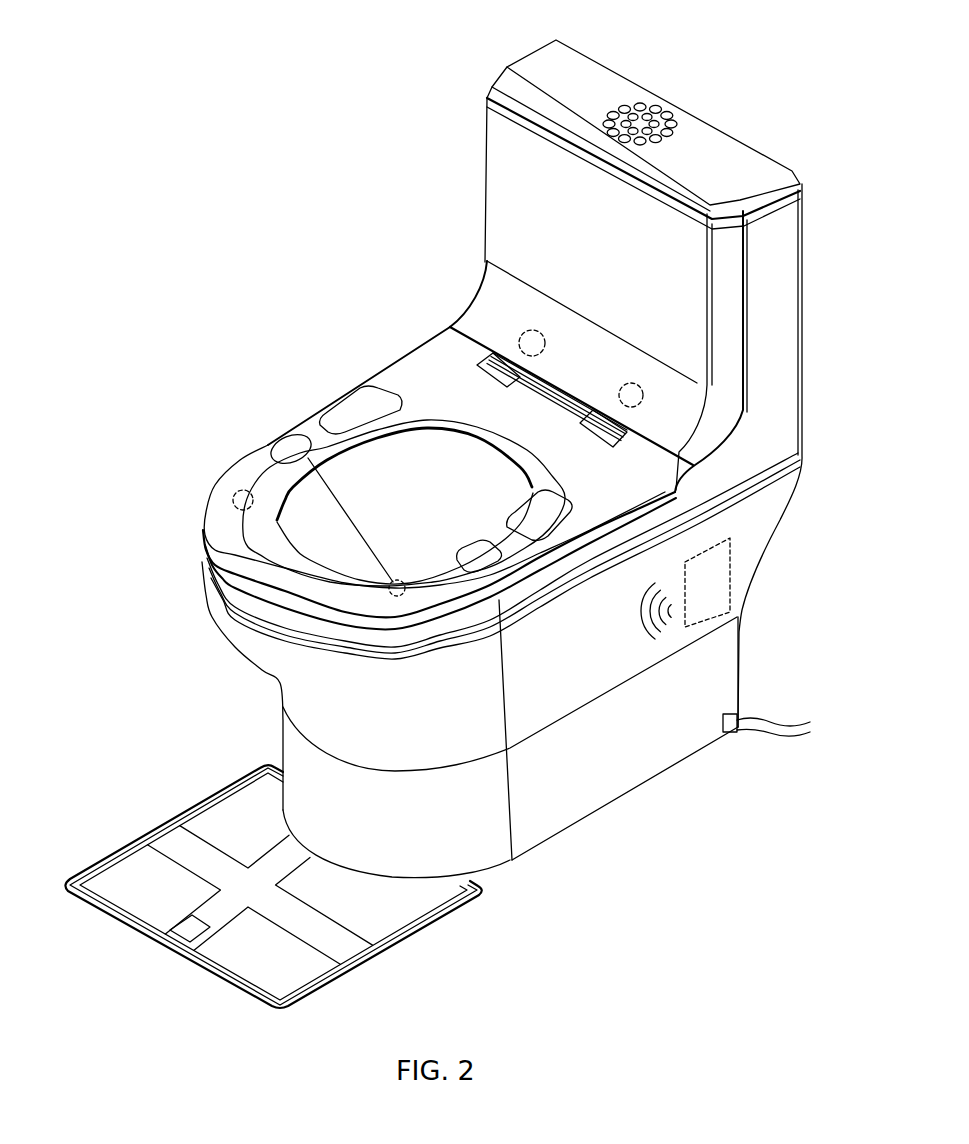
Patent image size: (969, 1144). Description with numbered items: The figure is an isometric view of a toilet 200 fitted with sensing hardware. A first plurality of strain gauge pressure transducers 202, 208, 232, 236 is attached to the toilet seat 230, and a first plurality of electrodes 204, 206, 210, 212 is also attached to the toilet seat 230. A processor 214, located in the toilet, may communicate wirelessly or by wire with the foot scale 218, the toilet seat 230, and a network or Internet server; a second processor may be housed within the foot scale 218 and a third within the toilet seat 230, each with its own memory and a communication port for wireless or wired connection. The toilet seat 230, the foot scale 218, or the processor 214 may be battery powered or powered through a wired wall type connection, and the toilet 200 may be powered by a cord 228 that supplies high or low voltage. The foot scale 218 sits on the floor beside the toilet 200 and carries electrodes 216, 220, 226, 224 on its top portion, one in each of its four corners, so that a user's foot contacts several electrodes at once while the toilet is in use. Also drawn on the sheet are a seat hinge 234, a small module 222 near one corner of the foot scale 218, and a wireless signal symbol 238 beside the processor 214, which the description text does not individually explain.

The toilet 200 is at (178, 98).
The strain gauge pressure transducer 202 is at (237, 492).
The electrode 204 is at (282, 440).
The electrode 206 is at (360, 390).
The strain gauge pressure transducer 208 is at (398, 592).
The electrode 210 is at (472, 543).
The electrode 212 is at (565, 505).
The processor 214 is at (710, 595).
The electrode 216 is at (112, 876).
The foot scale 218 is at (157, 822).
The electrode 220 is at (250, 790).
The sensor module 222 is at (187, 931).
The electrode 224 is at (265, 975).
The electrode 226 is at (404, 906).
The cord 228 is at (772, 740).
The toilet seat 230 is at (435, 380).
The strain gauge pressure transducer 232 is at (546, 337).
The hinge 234 is at (507, 374).
The strain gauge pressure transducer 236 is at (642, 388).
The wireless transceiver 238 is at (638, 618).